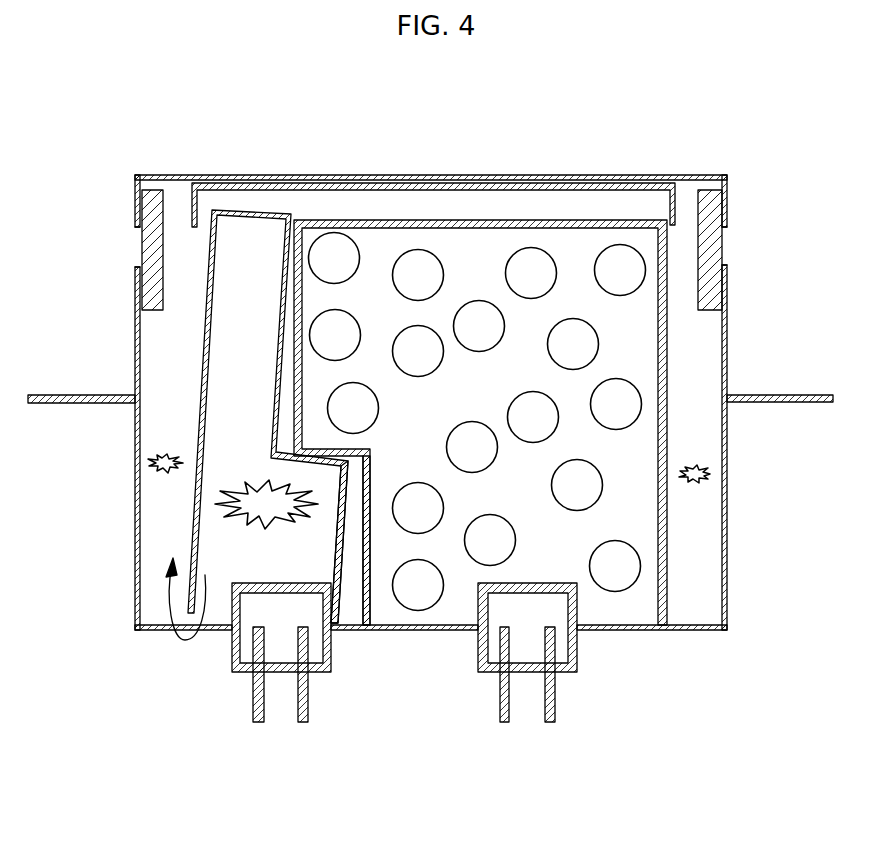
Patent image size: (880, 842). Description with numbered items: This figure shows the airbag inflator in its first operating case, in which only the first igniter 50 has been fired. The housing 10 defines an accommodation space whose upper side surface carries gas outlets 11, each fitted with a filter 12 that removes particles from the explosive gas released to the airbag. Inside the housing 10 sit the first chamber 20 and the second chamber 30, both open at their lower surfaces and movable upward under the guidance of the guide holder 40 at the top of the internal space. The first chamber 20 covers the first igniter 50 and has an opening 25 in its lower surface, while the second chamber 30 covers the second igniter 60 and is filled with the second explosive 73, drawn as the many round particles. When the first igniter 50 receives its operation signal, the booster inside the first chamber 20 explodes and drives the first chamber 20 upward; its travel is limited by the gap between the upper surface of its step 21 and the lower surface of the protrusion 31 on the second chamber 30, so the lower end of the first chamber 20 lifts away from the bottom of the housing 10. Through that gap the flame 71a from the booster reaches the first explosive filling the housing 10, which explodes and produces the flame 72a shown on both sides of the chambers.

The housing 10 is at (727, 290).
The gas outlet 11 is at (139, 245).
The filter 12 is at (153, 198).
The first chamber 20 is at (205, 356).
The step 21 is at (331, 464).
The opening 25 is at (185, 636).
The second chamber 30 is at (663, 546).
The protrusion 31 is at (352, 440).
The guide holder 40 is at (615, 185).
The first igniter 50 is at (242, 674).
The second igniter 60 is at (567, 673).
The flame 71a is at (220, 508).
The flame 72a is at (147, 462).
The second explosive 73 is at (417, 270).